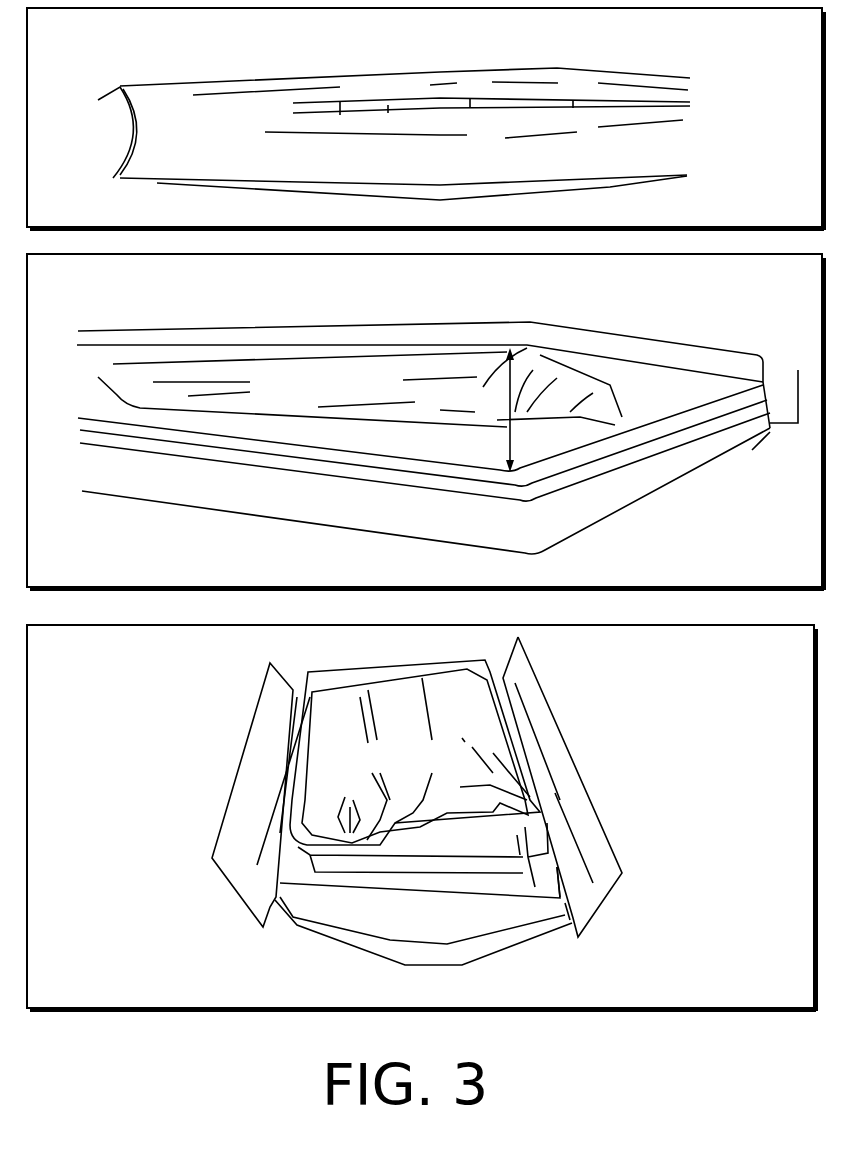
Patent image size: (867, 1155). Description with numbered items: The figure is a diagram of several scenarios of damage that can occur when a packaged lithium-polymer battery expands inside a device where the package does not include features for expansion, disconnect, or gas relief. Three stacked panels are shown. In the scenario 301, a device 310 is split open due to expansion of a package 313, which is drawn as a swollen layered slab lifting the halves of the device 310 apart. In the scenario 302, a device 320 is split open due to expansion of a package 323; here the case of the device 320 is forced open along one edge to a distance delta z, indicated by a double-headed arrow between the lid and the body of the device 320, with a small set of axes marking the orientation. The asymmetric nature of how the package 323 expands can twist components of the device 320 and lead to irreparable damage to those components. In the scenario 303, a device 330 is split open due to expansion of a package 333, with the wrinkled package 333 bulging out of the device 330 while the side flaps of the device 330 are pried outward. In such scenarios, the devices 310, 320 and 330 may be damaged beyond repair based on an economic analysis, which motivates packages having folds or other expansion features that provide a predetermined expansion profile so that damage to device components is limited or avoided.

The scenario 301 is at (175, 42).
The device 310 is at (283, 170).
The package 313 is at (132, 108).
The scenario 302 is at (175, 287).
The device 320 is at (308, 505).
The package 323 is at (380, 400).
The scenario 303 is at (175, 665).
The device 330 is at (472, 920).
The package 333 is at (461, 768).